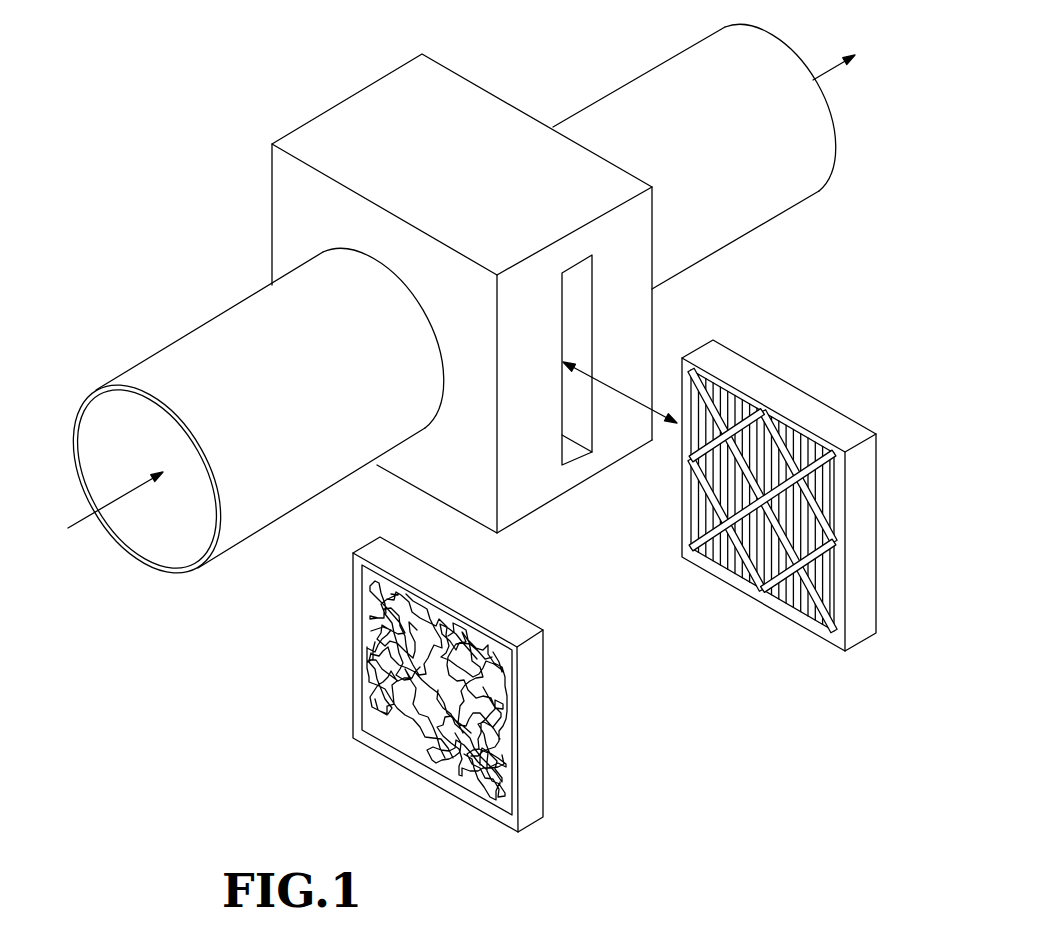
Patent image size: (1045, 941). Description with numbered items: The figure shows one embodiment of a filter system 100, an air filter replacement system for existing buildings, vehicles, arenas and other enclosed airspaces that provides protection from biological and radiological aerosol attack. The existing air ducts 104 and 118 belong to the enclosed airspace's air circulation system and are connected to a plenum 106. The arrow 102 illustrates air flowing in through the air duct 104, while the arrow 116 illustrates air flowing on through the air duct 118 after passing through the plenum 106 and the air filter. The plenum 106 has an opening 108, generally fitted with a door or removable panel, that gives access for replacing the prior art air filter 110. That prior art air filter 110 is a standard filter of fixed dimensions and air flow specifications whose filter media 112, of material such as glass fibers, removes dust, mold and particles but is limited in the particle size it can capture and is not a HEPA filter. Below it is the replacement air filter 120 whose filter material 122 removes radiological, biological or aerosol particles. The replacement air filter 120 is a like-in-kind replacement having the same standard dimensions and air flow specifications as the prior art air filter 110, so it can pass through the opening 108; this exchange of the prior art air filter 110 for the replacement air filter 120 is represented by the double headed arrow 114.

The filter system 100 is at (236, 38).
The arrow 102 is at (115, 535).
The air duct 104 is at (313, 377).
The plenum 106 is at (460, 148).
The opening 108 is at (580, 342).
The prior art air filter 110 is at (773, 382).
The filter media 112 is at (753, 535).
The double headed arrow 114 is at (630, 405).
The arrow 116 is at (829, 41).
The air duct 118 is at (715, 118).
The replacement air filter 120 is at (533, 725).
The filter material 122 is at (395, 680).